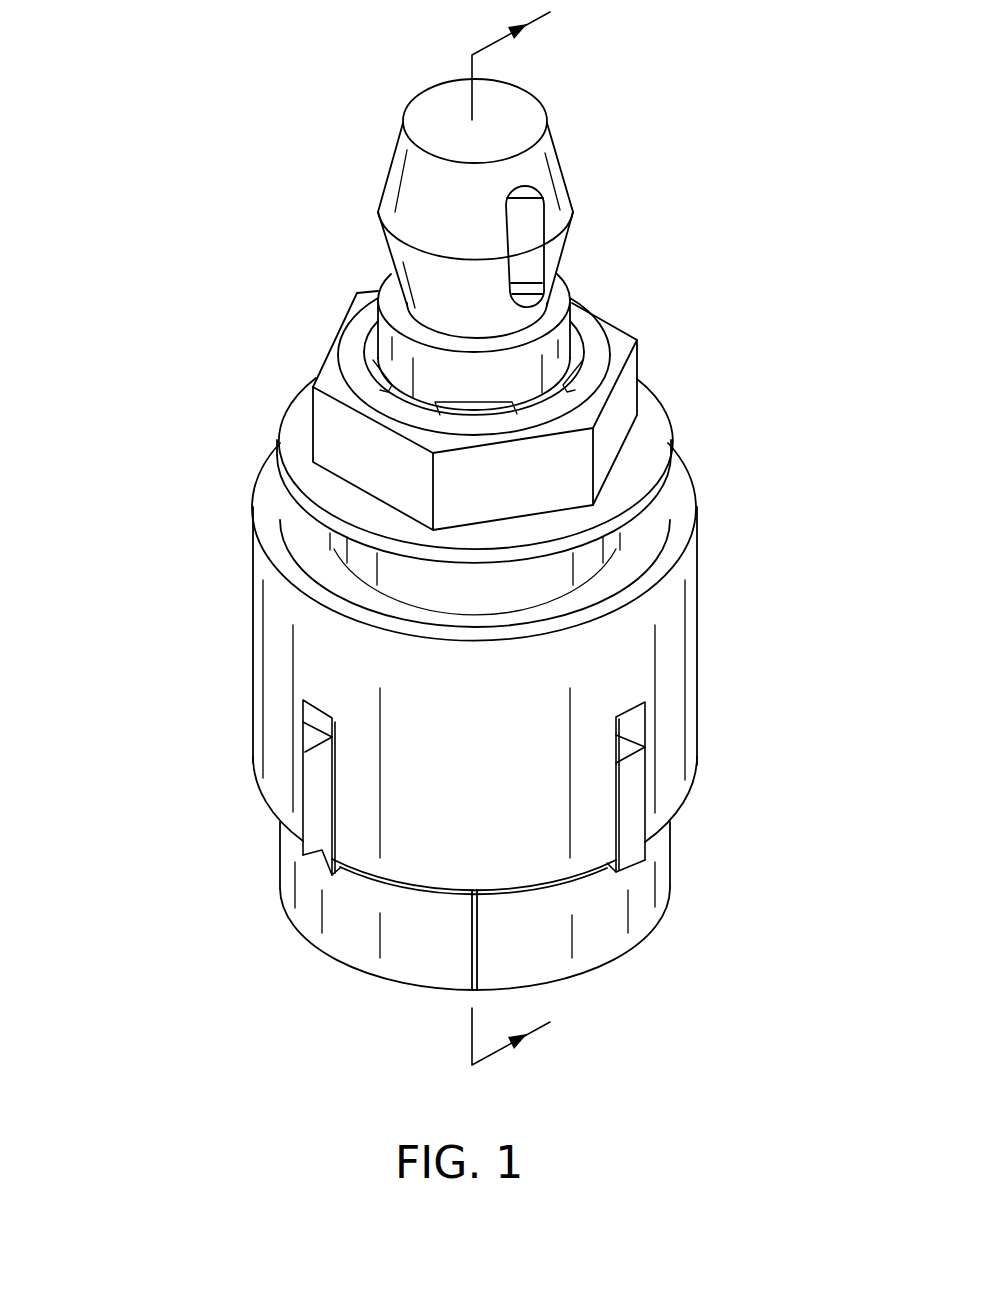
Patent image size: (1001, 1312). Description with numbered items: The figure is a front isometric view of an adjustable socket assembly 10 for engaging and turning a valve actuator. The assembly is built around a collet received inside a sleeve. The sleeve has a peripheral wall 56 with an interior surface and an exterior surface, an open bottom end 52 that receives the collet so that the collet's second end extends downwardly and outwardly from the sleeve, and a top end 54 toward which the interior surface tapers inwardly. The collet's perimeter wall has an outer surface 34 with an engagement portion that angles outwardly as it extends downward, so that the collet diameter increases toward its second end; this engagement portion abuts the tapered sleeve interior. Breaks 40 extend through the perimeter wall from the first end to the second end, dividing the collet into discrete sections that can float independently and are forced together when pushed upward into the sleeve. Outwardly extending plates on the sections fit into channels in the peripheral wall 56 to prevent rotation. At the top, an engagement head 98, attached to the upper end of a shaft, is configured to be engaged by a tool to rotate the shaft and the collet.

The adjustable socket assembly 10 is at (122, 175).
The outer surface 34 is at (585, 935).
The breaks 40 is at (472, 942).
The bottom end 52 is at (688, 805).
The top end 54 is at (690, 505).
The peripheral wall 56 is at (700, 624).
The engagement head 98 is at (620, 213).